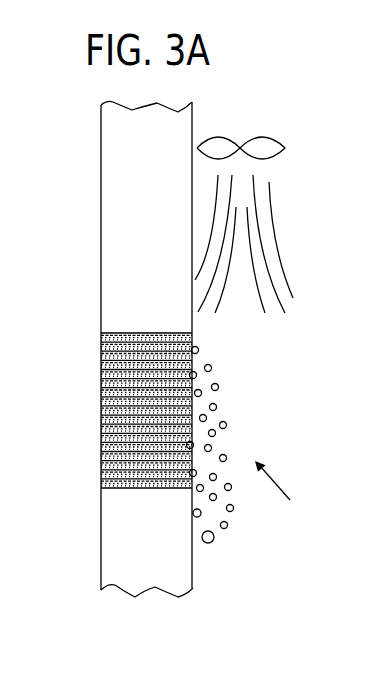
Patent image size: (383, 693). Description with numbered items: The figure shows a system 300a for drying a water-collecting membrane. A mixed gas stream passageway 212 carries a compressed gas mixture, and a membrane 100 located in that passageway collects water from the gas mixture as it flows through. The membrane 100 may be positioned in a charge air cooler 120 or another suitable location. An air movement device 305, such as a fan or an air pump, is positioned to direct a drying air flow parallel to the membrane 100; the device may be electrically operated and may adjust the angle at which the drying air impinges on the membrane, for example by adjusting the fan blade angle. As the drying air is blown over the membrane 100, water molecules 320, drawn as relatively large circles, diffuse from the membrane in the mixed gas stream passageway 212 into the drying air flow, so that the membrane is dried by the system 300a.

The mixed gas stream passageway 212 is at (101, 217).
The membrane 100 is at (101, 383).
The air movement device 305 is at (275, 137).
The charge air cooler 120 is at (242, 386).
The water molecules 320 is at (213, 545).
The system 300a is at (284, 498).